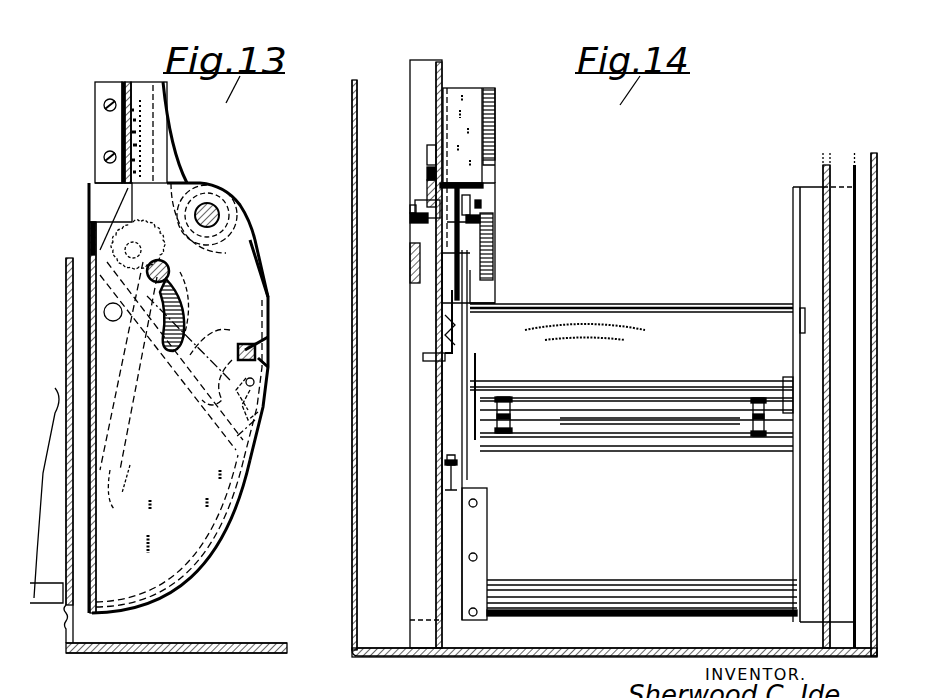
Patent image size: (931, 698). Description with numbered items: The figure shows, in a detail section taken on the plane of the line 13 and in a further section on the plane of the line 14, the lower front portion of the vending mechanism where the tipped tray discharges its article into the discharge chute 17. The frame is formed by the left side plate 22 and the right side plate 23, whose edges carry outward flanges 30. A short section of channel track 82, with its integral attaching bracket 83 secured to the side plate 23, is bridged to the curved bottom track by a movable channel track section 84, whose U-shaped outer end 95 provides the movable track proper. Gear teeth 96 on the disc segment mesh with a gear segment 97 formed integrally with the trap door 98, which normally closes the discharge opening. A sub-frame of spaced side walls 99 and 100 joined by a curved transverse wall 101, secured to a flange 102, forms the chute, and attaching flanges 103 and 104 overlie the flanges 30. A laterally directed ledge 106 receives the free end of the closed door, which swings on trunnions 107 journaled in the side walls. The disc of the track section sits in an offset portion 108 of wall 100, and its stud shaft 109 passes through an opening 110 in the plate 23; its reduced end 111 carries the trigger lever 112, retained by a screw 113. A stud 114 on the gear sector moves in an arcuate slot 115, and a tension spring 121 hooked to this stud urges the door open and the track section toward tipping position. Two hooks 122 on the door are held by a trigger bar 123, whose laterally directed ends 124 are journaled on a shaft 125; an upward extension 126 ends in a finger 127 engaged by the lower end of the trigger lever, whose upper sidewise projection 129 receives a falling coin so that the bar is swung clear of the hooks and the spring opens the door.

In FIG. 13, the section line 13 is at (254, 213).
In FIG. 13, the section line 14 is at (333, 160).
In FIG. 13, the discharge chute 17 is at (51, 475).
In FIG. 14, the left side plate 22 is at (823, 180).
In FIG. 14, the right side plate 23 is at (447, 82).
In FIG. 14, the outward flanges 30 is at (420, 60).
In FIG. 13, the short section of channel track 82 is at (147, 82).
In FIG. 14, the short section of channel track 82 is at (495, 204).
In FIG. 13, the attaching bracket 83 is at (102, 128).
In FIG. 14, the attaching bracket 83 is at (473, 93).
In FIG. 13, the movable channel track section 84 is at (252, 281).
In FIG. 14, the movable channel track section 84 is at (497, 292).
In FIG. 13, the outer end of segment 95 is at (268, 302).
In FIG. 13, the gear teeth 96 is at (95, 185).
In FIG. 13, the gear segment 97 is at (125, 200).
In FIG. 14, the gear segment 97 is at (483, 340).
In FIG. 13, the trap door 98 is at (245, 353).
In FIG. 14, the trap door 98 is at (665, 330).
In FIG. 14, the side wall 99 is at (793, 268).
In FIG. 13, the side wall 100 is at (178, 532).
In FIG. 14, the side wall 100 is at (472, 472).
In FIG. 13, the transverse wall 101 is at (222, 516).
In FIG. 14, the transverse wall 101 is at (656, 566).
In FIG. 13, the flange 102 is at (187, 587).
In FIG. 14, the flange 102 is at (487, 542).
In FIG. 13, the attaching flange 103 is at (100, 523).
In FIG. 14, the attaching flange 103 is at (794, 210).
In FIG. 14, the attaching flange 104 is at (452, 563).
In FIG. 14, the ledge 106 is at (677, 470).
In FIG. 14, the trunnions 107 is at (424, 362).
In FIG. 13, the offset portion 108 is at (207, 188).
In FIG. 14, the offset portion 108 is at (480, 202).
In FIG. 13, the stud shaft 109 is at (218, 212).
In FIG. 14, the stud shaft 109 is at (447, 222).
In FIG. 14, the opening 110 is at (425, 195).
In FIG. 14, the reduced trunnion end 111 is at (414, 220).
In FIG. 14, the trigger lever 112 is at (428, 327).
In FIG. 14, the screw 113 is at (411, 210).
In FIG. 13, the stud 114 is at (92, 232).
In FIG. 14, the stud 114 is at (445, 270).
In FIG. 13, the arcuate slot 115 is at (152, 298).
In FIG. 13, the tension spring 121 is at (130, 452).
In FIG. 14, the tension spring 121 is at (432, 472).
In FIG. 13, the hooks 122 is at (261, 432).
In FIG. 14, the hooks 122 is at (428, 393).
In FIG. 13, the trigger bar 123 is at (265, 410).
In FIG. 14, the trigger bar 123 is at (607, 470).
In FIG. 13, the laterally directed ends 124 is at (267, 380).
In FIG. 14, the laterally directed ends 124 is at (480, 372).
In FIG. 13, the shaft 125 is at (230, 392).
In FIG. 14, the shaft 125 is at (682, 390).
In FIG. 13, the upward extension 126 is at (261, 335).
In FIG. 14, the upward extension 126 is at (549, 322).
In FIG. 13, the finger 127 is at (210, 337).
In FIG. 14, the sidewise projection 129 is at (422, 158).